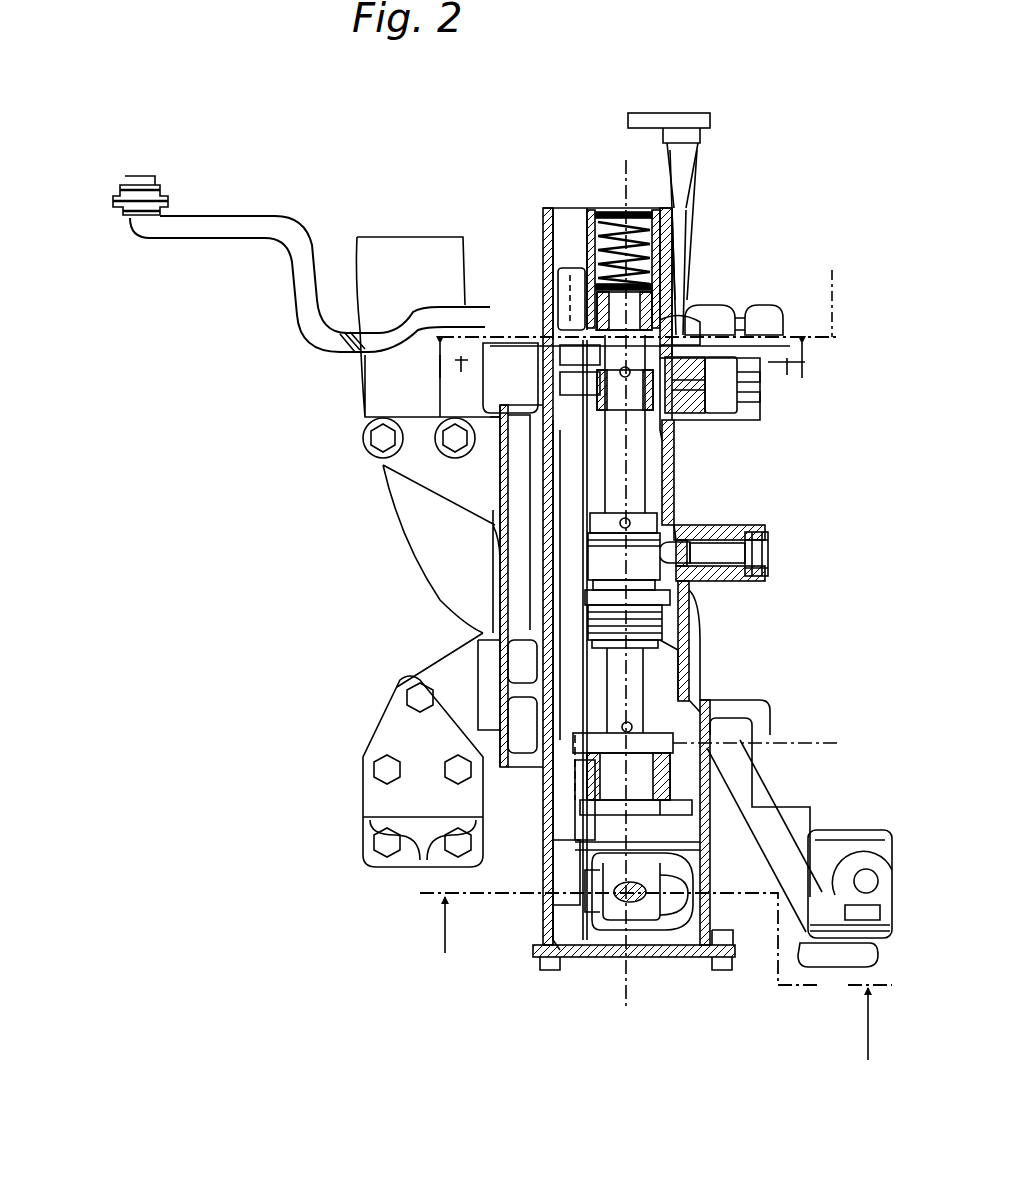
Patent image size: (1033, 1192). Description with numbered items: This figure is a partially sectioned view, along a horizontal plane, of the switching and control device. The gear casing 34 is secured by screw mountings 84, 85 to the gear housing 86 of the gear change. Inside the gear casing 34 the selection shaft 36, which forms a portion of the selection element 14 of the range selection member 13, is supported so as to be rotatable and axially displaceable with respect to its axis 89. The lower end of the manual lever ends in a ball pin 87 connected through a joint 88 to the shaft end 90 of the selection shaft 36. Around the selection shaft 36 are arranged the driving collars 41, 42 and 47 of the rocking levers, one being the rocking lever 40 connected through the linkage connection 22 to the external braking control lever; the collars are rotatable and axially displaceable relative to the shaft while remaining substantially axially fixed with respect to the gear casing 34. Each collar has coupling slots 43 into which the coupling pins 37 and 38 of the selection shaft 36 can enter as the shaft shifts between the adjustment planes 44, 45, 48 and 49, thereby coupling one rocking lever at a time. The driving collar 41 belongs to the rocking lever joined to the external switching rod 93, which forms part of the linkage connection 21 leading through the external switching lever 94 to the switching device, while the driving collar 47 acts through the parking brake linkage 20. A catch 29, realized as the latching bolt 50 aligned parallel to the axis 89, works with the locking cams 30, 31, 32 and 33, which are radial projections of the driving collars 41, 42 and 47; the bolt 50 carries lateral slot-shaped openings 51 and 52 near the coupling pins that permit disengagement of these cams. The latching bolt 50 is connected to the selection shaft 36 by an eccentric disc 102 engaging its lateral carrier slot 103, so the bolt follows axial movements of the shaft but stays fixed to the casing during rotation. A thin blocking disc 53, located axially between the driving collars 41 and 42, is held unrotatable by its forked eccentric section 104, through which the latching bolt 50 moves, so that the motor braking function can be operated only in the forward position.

The range selection member 13 is at (580, 874).
The selection element 14 is at (662, 463).
The parking brake linkage 20 is at (835, 976).
The linkage connection 21 is at (236, 214).
The linkage connection 22 is at (735, 95).
The catch 29 is at (545, 502).
The locking cam 30 is at (578, 382).
The locking cam 31 is at (597, 362).
The locking cam 32 is at (545, 288).
The locking cam 33 is at (562, 790).
The gear casing 34 is at (692, 642).
The selection shaft 36 is at (630, 498).
The coupling pin 37 is at (640, 405).
The coupling pin 38 is at (627, 722).
The rocking lever 40 is at (690, 187).
The driving collar 41 is at (732, 320).
The driving collar 42 is at (662, 320).
The coupling slot 43 is at (625, 792).
The adjustment plane 44 is at (447, 378).
The adjustment plane 45 is at (456, 335).
The driving collar 47 is at (650, 816).
The adjustment plane 48 is at (784, 738).
The adjustment plane 49 is at (456, 440).
The latching bolt 50 is at (567, 530).
The slot-shaped opening 51 is at (581, 390).
The slot-shaped opening 52 is at (578, 742).
The blocking disc 53 is at (702, 333).
The screw mounting 84 is at (370, 868).
The screw mounting 85 is at (400, 486).
The gear housing 86 is at (409, 236).
The ball pin 87 is at (623, 906).
The joint 88 is at (664, 925).
The axis 89 is at (620, 176).
The shaft end 90 is at (662, 851).
The external switching rod 93 is at (345, 348).
The external switching lever 94 is at (160, 198).
The eccentric disc 102 is at (612, 878).
The carrier slot 103 is at (578, 848).
The forked eccentric section 104 is at (522, 300).